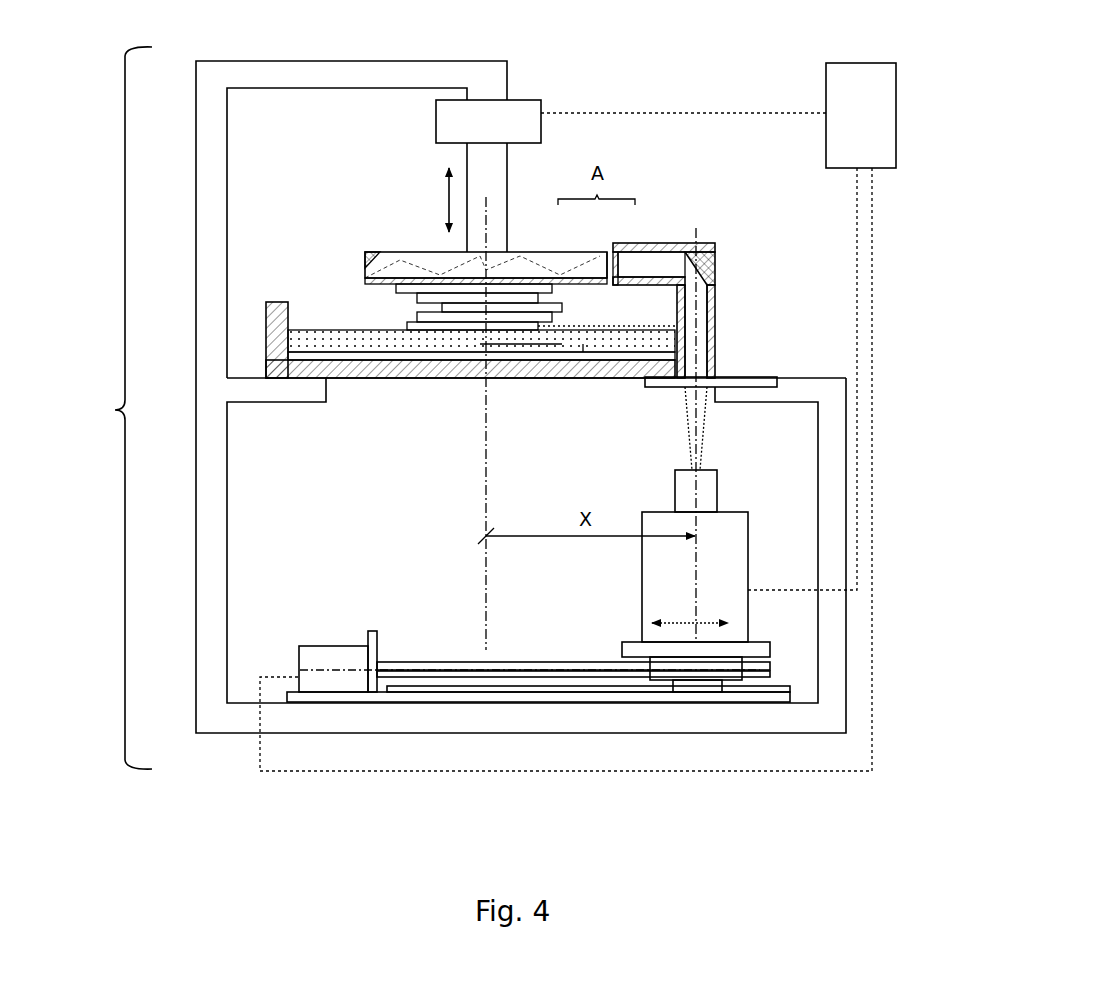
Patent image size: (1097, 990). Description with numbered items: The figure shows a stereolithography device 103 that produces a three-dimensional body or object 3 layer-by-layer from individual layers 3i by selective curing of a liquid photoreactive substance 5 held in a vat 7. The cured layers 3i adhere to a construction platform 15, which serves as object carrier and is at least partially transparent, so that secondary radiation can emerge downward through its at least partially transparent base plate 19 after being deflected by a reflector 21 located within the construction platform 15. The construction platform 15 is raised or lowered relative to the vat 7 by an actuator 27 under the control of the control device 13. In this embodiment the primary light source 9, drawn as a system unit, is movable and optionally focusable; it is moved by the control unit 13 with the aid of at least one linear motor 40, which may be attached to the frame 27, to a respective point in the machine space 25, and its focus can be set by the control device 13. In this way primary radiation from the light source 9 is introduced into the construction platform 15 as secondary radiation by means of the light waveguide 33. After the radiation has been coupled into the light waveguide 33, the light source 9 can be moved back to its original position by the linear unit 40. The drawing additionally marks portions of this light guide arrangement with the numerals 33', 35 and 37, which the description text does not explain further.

The stereolithography device 103 is at (111, 411).
The actuator 27 is at (500, 134).
The control device 13 is at (873, 128).
The machine space 25 is at (270, 457).
The construction platform 15 is at (406, 232).
The reflector 21 is at (376, 254).
The base plate 19 is at (364, 276).
The layers 3i is at (507, 337).
The three-dimensional body or object 3 is at (378, 316).
The photoreactive substance 5 is at (611, 340).
The vat 7 is at (257, 297).
The light waveguide 33 is at (664, 218).
The housing block wall 33' is at (593, 243).
The beam guide column 35 is at (715, 243).
The mirror 37 is at (685, 287).
The primary light source 9 is at (622, 572).
The linear motor 40 is at (325, 635).